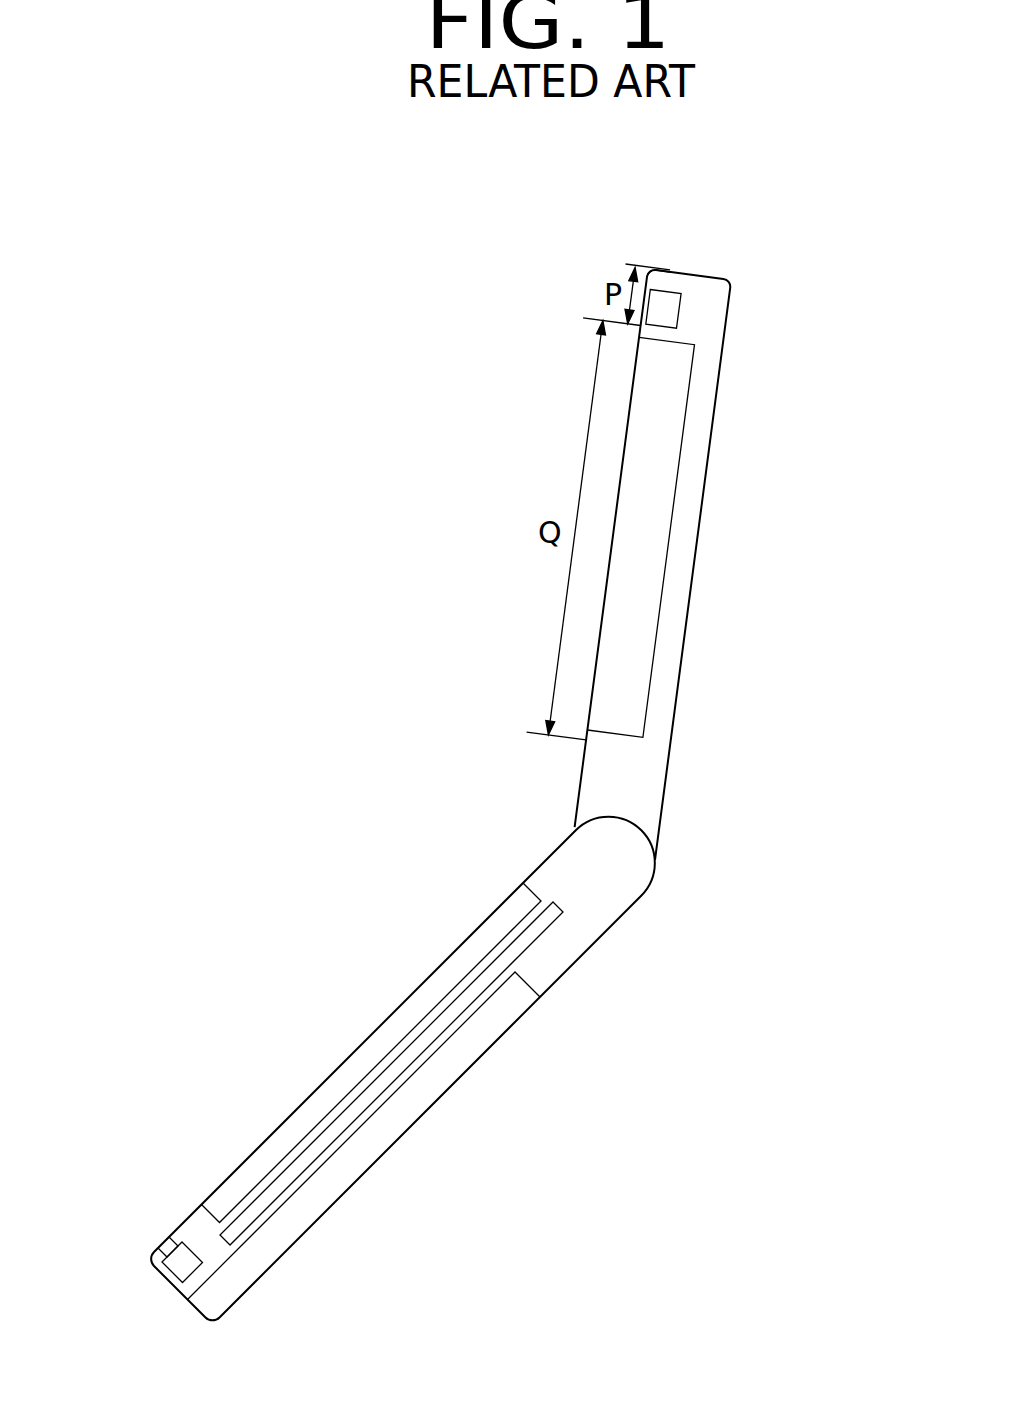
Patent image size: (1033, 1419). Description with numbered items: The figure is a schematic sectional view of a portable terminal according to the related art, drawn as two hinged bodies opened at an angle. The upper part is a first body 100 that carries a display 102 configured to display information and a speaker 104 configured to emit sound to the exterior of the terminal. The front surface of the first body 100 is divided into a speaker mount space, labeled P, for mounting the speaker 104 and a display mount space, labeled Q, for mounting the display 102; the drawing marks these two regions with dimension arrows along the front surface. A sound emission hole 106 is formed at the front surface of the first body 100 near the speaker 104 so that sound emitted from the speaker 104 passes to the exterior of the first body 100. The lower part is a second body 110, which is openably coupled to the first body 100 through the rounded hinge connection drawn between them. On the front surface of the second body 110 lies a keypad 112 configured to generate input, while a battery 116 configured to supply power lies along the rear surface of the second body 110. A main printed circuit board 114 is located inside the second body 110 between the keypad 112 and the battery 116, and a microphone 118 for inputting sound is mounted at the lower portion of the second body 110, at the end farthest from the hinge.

The first body 100 is at (722, 555).
The display 102 is at (643, 677).
The speaker 104 is at (678, 307).
The sound emission hole 106 is at (651, 292).
The second body 110 is at (518, 1070).
The keypad 112 is at (312, 1100).
The main printed circuit board 114 is at (283, 1179).
The battery 116 is at (392, 1143).
The microphone 118 is at (165, 1281).